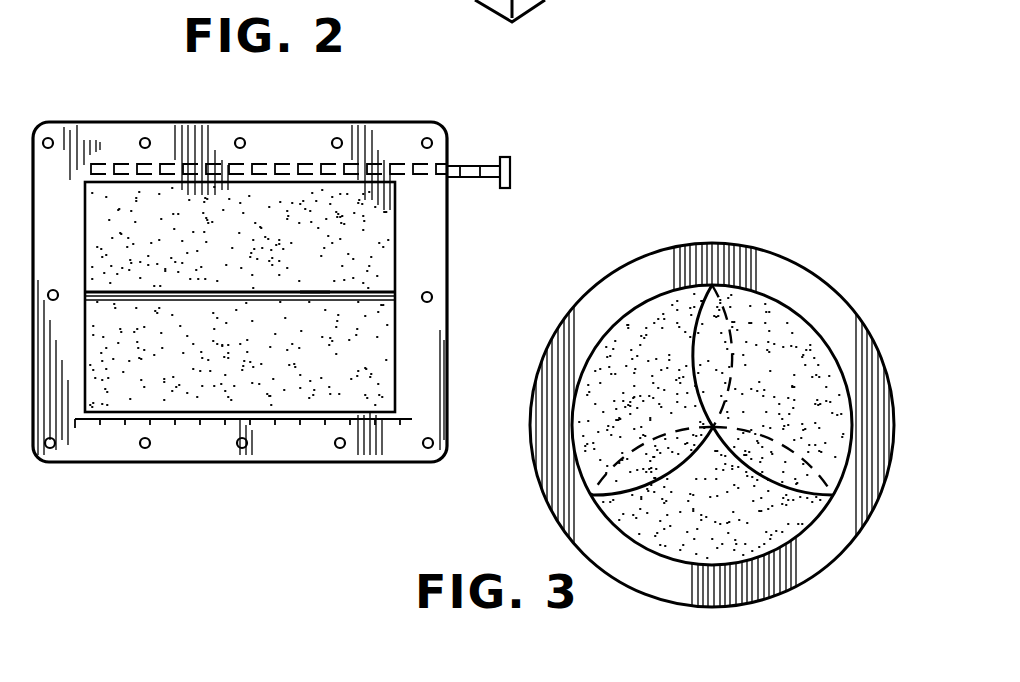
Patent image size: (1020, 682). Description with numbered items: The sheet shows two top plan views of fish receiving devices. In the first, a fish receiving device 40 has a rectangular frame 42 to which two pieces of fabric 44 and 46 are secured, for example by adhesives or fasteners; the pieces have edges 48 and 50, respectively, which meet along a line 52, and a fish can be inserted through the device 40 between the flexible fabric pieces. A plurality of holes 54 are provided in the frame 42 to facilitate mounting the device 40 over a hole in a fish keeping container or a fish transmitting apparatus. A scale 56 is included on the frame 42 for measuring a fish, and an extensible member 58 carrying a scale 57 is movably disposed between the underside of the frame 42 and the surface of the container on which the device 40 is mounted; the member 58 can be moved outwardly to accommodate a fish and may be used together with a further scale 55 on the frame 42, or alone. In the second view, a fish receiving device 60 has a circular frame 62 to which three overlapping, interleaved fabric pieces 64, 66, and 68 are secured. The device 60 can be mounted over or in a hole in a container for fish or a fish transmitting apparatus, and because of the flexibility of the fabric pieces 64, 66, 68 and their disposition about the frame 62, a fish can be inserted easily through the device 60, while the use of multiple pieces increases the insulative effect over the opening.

In FIG. 2, the fish receiving device 40 is at (450, 258).
In FIG. 2, the rectangular frame 42 is at (420, 372).
In FIG. 2, the fabric piece 44 is at (110, 343).
In FIG. 2, the fabric piece 46 is at (103, 237).
In FIG. 2, the edge 48 is at (200, 297).
In FIG. 2, the edge 50 is at (313, 292).
In FIG. 2, the line 52 is at (248, 297).
In FIG. 2, the holes 54 is at (50, 138).
In FIG. 2, the scale 55 is at (210, 164).
In FIG. 2, the scale 56 is at (408, 420).
In FIG. 2, the scale 57 is at (482, 178).
In FIG. 2, the extensible member 58 is at (512, 170).
In FIG. 3, the fish receiving device 60 is at (628, 258).
In FIG. 3, the circular frame 62 is at (742, 243).
In FIG. 3, the fabric piece 64 is at (788, 517).
In FIG. 3, the fabric piece 66 is at (588, 432).
In FIG. 3, the fabric piece 68 is at (770, 307).